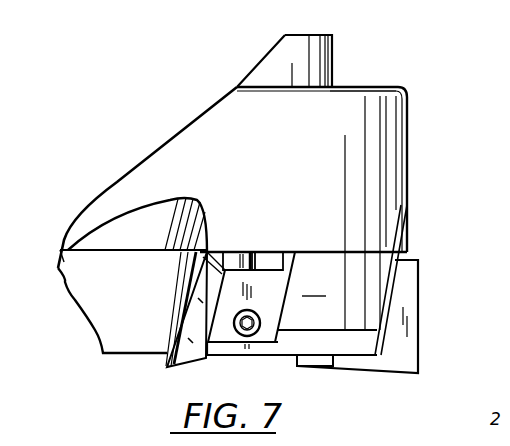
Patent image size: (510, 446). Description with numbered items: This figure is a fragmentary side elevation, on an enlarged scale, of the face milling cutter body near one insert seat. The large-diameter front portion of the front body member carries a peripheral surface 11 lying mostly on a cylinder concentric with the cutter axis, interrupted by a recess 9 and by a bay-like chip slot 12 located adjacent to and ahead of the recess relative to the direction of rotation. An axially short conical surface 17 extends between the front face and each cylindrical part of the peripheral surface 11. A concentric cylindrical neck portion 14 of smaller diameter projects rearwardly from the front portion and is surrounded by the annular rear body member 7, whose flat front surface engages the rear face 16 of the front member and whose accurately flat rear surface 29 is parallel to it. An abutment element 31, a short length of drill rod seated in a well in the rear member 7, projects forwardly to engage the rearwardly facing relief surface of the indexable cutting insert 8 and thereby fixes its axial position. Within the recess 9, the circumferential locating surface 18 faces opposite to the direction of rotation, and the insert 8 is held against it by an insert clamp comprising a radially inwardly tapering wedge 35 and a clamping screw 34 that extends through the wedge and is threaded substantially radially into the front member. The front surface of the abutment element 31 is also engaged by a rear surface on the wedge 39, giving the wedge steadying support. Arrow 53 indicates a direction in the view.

The annular rear body member 7 is at (407, 128).
The indexable cutting insert 8 is at (167, 367).
The recess 9 is at (267, 252).
The peripheral surface 11 is at (307, 280).
The chip slot 12 is at (143, 342).
The neck portion 14 is at (335, 48).
The rear face 16 is at (330, 252).
The conical surface 17 is at (332, 353).
The circumferential locating surface 18 is at (200, 290).
The rear surface 29 is at (360, 86).
The abutment element 31 is at (216, 250).
The clamping screw 34 is at (247, 337).
The wedge 35 is at (262, 347).
The wedge 39 is at (281, 268).
The direction arrow 53 is at (416, 88).